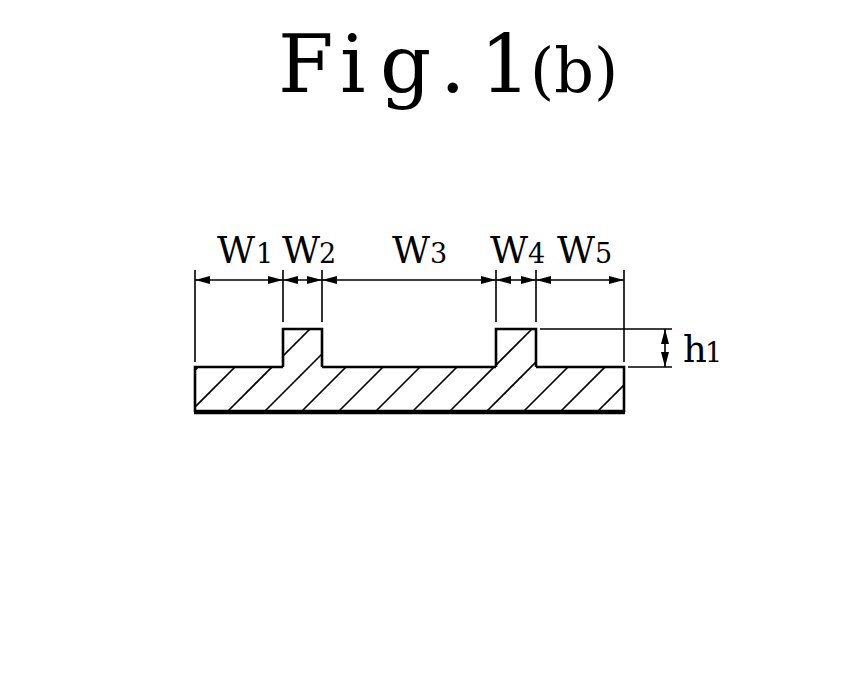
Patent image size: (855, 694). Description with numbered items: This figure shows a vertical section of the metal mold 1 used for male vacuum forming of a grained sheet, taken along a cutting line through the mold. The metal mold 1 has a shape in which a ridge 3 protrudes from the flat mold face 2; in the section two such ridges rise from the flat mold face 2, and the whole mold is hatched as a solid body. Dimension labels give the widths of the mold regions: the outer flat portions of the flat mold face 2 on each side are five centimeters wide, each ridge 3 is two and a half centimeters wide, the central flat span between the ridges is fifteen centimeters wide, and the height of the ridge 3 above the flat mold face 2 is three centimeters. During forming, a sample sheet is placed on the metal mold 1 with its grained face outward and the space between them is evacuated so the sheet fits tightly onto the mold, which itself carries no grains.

The metal mold 1 is at (388, 405).
The flat mold face 2 is at (218, 367).
The ridge 3 is at (283, 342).